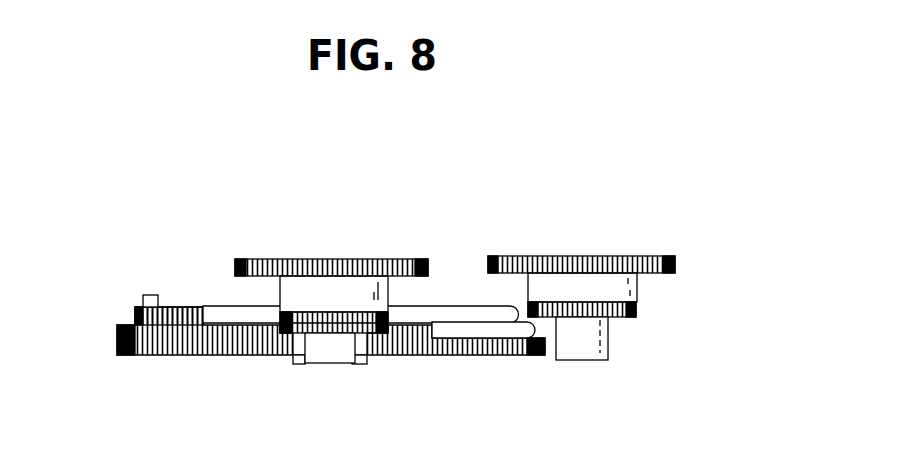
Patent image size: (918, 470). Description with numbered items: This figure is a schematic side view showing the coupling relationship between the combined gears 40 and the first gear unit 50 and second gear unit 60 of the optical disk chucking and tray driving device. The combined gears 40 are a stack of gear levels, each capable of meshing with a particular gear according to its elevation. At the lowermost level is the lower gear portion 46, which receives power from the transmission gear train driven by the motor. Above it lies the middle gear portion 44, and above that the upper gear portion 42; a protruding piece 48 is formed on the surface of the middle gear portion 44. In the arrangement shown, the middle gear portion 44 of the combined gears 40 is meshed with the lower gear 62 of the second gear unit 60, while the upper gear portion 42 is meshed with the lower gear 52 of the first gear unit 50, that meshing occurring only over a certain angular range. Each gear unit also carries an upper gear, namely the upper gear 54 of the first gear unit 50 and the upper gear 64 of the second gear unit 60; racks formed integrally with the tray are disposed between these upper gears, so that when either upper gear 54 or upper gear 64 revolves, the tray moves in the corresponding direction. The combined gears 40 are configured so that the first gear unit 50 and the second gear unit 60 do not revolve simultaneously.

The combined gears 40 is at (197, 272).
The upper gear portion 42 is at (133, 312).
The middle gear portion 44 is at (173, 357).
The lower gear portion 46 is at (527, 355).
The protruding piece 48 is at (148, 295).
The first gear unit 50 is at (624, 250).
The lower gear 52 is at (636, 305).
The upper gear 54 is at (675, 260).
The second gear unit 60 is at (316, 295).
The lower gear 62 is at (336, 336).
The upper gear 64 is at (253, 262).